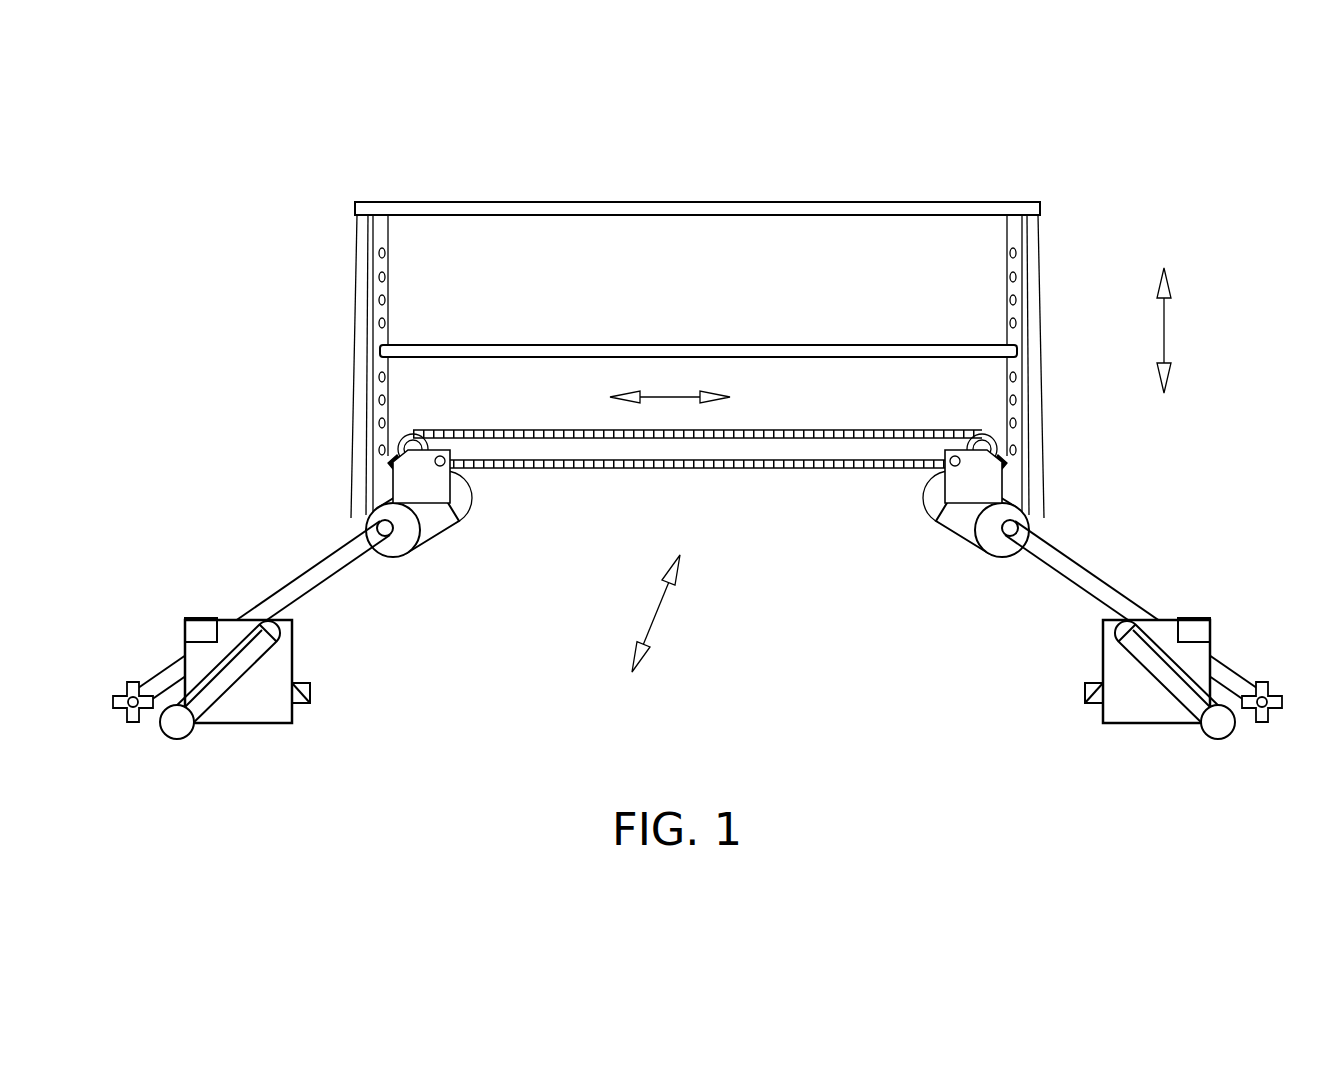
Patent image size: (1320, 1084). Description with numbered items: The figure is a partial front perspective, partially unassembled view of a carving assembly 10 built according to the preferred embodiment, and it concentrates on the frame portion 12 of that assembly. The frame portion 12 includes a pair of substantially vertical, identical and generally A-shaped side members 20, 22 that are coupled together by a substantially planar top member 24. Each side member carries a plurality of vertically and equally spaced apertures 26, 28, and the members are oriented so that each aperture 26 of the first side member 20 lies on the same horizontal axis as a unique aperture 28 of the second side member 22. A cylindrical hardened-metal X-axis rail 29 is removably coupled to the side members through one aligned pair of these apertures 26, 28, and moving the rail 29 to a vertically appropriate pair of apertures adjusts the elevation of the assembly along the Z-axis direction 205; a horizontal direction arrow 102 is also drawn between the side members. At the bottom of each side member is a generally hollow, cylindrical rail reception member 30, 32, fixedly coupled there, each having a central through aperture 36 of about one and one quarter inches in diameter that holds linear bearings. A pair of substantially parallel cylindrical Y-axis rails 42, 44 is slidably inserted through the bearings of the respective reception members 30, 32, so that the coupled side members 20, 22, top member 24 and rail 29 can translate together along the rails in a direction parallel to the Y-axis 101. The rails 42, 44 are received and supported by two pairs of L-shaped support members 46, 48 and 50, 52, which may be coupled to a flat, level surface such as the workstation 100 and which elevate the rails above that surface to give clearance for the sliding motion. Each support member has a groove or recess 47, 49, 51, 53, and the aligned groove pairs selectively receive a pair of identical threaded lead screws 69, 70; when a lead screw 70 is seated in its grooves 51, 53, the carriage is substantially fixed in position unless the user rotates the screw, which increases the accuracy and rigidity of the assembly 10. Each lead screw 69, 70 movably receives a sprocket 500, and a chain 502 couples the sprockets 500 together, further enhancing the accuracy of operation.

The carving assembly 10 is at (657, 115).
The frame portion 12 is at (377, 187).
The side member 20 is at (357, 272).
The side member 22 is at (1008, 240).
The top member 24 is at (851, 202).
The apertures 26 is at (386, 257).
The apertures 28 is at (1012, 303).
The X-axis rail 29 is at (698, 345).
The rail reception member 30 is at (443, 517).
The rail reception member 32 is at (958, 510).
The through aperture 36 is at (395, 545).
The Y-axis rail 42 is at (330, 598).
The Y-axis rail 44 is at (1068, 592).
The L-shaped support member 46 is at (305, 705).
The groove 47 is at (215, 620).
The L-shaped support member 48 is at (455, 482).
The groove 49 is at (397, 458).
The L-shaped support member 50 is at (945, 460).
The groove 51 is at (1000, 455).
The L-shaped support member 52 is at (1090, 700).
The groove 53 is at (1195, 620).
The lead screw 69 is at (140, 725).
The lead screw 70 is at (1262, 722).
The workstation 100 is at (890, 620).
The Y-axis 101 is at (655, 607).
The horizontal direction 102 is at (678, 397).
The Z-axis direction 205 is at (1164, 330).
The sprocket 500 is at (418, 432).
The chain 502 is at (690, 468).